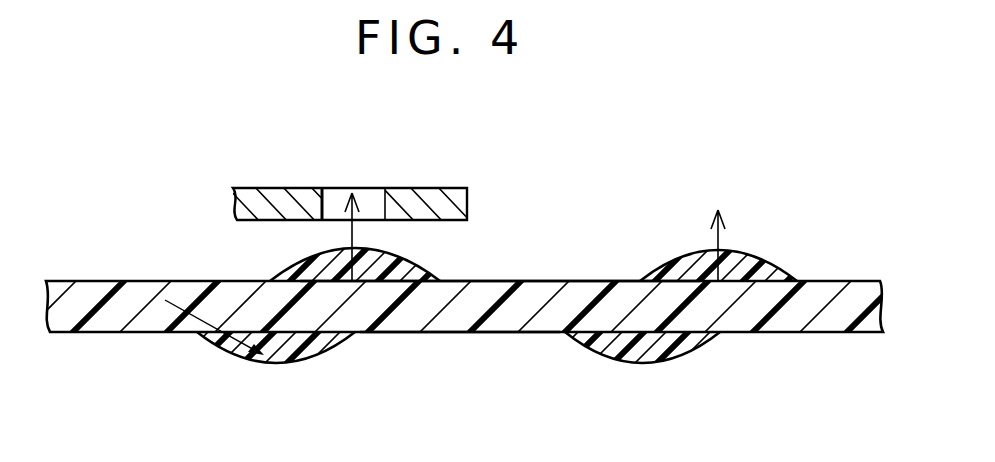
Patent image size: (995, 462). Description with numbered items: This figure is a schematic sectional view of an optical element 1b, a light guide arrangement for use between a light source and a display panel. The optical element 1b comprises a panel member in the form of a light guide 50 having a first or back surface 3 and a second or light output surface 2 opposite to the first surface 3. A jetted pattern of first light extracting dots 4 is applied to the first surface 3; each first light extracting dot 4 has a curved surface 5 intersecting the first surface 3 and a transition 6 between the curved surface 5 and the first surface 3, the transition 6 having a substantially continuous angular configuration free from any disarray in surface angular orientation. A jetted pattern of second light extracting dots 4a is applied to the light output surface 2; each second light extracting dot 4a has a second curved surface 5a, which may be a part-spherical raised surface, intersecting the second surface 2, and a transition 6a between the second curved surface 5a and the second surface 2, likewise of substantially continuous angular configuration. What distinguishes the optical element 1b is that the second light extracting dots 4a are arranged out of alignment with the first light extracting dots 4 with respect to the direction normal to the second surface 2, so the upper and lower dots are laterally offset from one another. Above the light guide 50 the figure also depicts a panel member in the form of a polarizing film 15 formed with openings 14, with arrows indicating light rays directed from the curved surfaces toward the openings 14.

The optical element 1b is at (103, 256).
The second or light output surface 2 is at (577, 280).
The first or back surface 3 is at (497, 333).
The first light extracting dots 4 is at (246, 374).
The second light extracting dots 4a is at (436, 253).
The curved surface 5 is at (303, 363).
The second curved surface 5a is at (300, 262).
The transition 6 is at (203, 333).
The transition 6a is at (440, 278).
The openings 14 is at (331, 196).
The polarizing film 15 is at (262, 198).
The light guide 50 is at (822, 333).